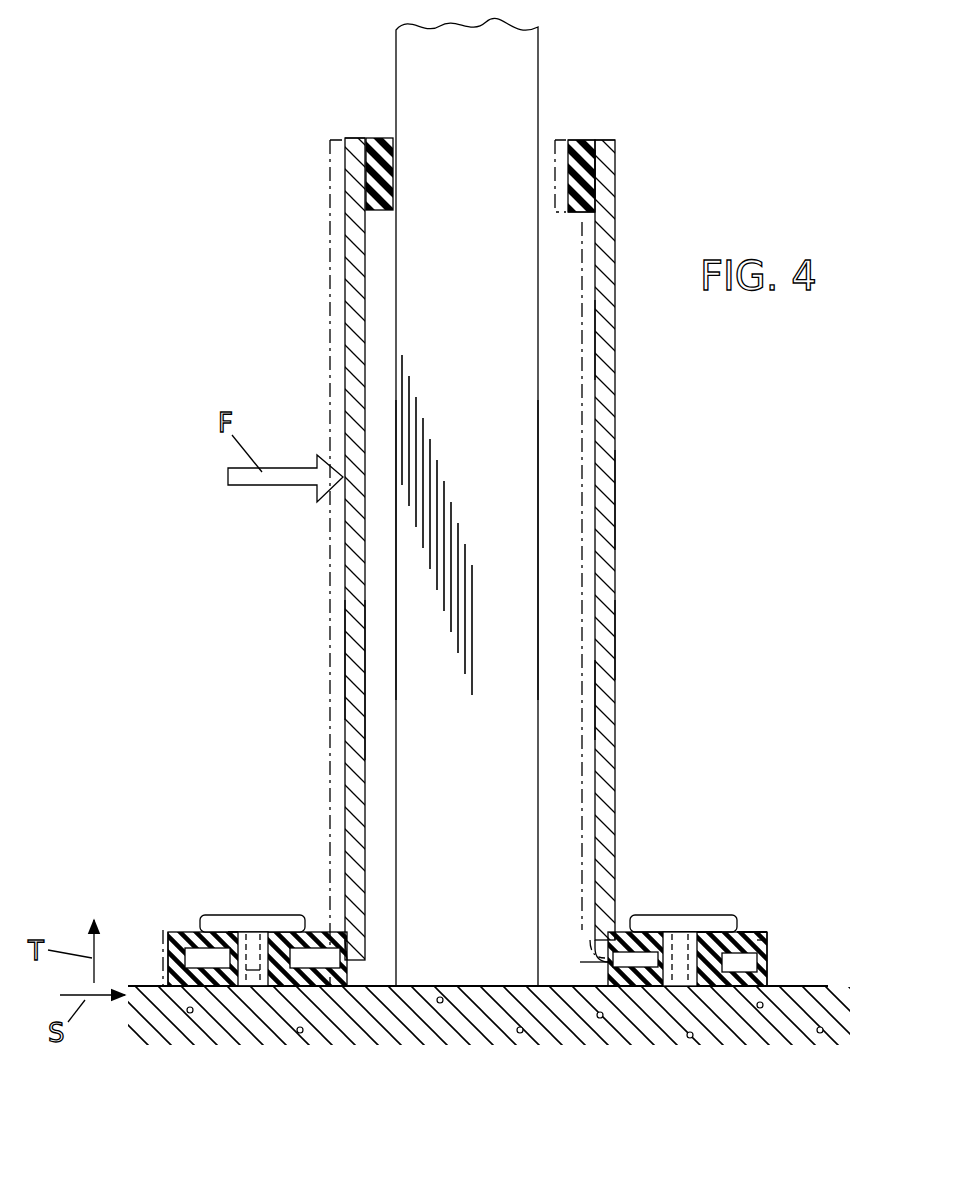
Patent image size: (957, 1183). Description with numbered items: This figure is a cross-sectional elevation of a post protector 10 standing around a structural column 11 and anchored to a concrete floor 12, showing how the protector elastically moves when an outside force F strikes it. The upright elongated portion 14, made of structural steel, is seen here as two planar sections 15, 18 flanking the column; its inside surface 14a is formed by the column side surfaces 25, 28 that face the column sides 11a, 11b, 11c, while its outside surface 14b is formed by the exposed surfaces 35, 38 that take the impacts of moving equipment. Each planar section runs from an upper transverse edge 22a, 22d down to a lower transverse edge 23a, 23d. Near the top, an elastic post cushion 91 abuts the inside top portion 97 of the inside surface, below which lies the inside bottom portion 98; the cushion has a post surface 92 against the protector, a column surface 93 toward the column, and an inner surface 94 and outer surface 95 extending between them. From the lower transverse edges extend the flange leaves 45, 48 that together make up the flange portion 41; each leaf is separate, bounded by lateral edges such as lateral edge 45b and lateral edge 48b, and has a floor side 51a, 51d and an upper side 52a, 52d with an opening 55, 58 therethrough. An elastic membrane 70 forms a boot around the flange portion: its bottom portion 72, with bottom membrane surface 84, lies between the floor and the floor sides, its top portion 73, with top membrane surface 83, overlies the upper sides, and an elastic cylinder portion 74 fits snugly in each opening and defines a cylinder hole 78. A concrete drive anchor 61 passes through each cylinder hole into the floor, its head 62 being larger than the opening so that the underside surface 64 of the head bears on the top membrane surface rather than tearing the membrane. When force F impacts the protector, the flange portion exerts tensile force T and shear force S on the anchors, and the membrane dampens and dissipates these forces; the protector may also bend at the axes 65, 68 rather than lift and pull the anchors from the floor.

The post protector 10 is at (258, 243).
The structural column 11 is at (392, 45).
The column side 11a is at (538, 557).
The column side 11b is at (505, 612).
The column side 11c is at (397, 578).
The concrete floor 12 is at (828, 986).
The elongated portion 14 is at (341, 333).
The inside surface 14a is at (596, 338).
The outside surface 14b is at (616, 412).
The planar section 15 is at (620, 500).
The planar section 18 is at (341, 540).
The upper transverse edge 22a is at (676, 122).
The upper transverse edge 22d is at (345, 138).
The lower transverse edge 23a is at (598, 985).
The lower transverse edge 23d is at (350, 965).
The column side surface 25 is at (596, 700).
The column side surface 28 is at (368, 684).
The exposed surface 35 is at (616, 638).
The exposed surface 38 is at (345, 660).
The flange portion 41 is at (772, 944).
The flange leaf 45 is at (765, 990).
The lateral edge 45b is at (757, 960).
The flange leaf 48 is at (207, 985).
The lateral edge 48b is at (162, 935).
The floor side 51a is at (735, 992).
The floor side 51d is at (187, 977).
The upper side 52a is at (757, 932).
The upper side 52d is at (198, 945).
The opening 55 is at (722, 918).
The opening 58 is at (283, 945).
The concrete drive anchor 61 is at (245, 990).
The head 62 is at (245, 918).
The underside surface 64 is at (228, 945).
The axis 65 is at (592, 960).
The axis 68 is at (347, 955).
The elastic membrane 70 is at (752, 930).
The bottom portion 72 is at (310, 985).
The top portion 73 is at (322, 935).
The elastic cylinder portion 74 is at (652, 950).
The cylinder hole 78 is at (248, 978).
The top membrane surface 83 is at (616, 935).
The bottom membrane surface 84 is at (643, 992).
The elastic post cushion 91 is at (578, 136).
The post surface 92 is at (600, 178).
The column surface 93 is at (393, 158).
The inner surface 94 is at (596, 214).
The outer surface 95 is at (596, 140).
The inside top portion 97 is at (596, 230).
The inside bottom portion 98 is at (590, 948).